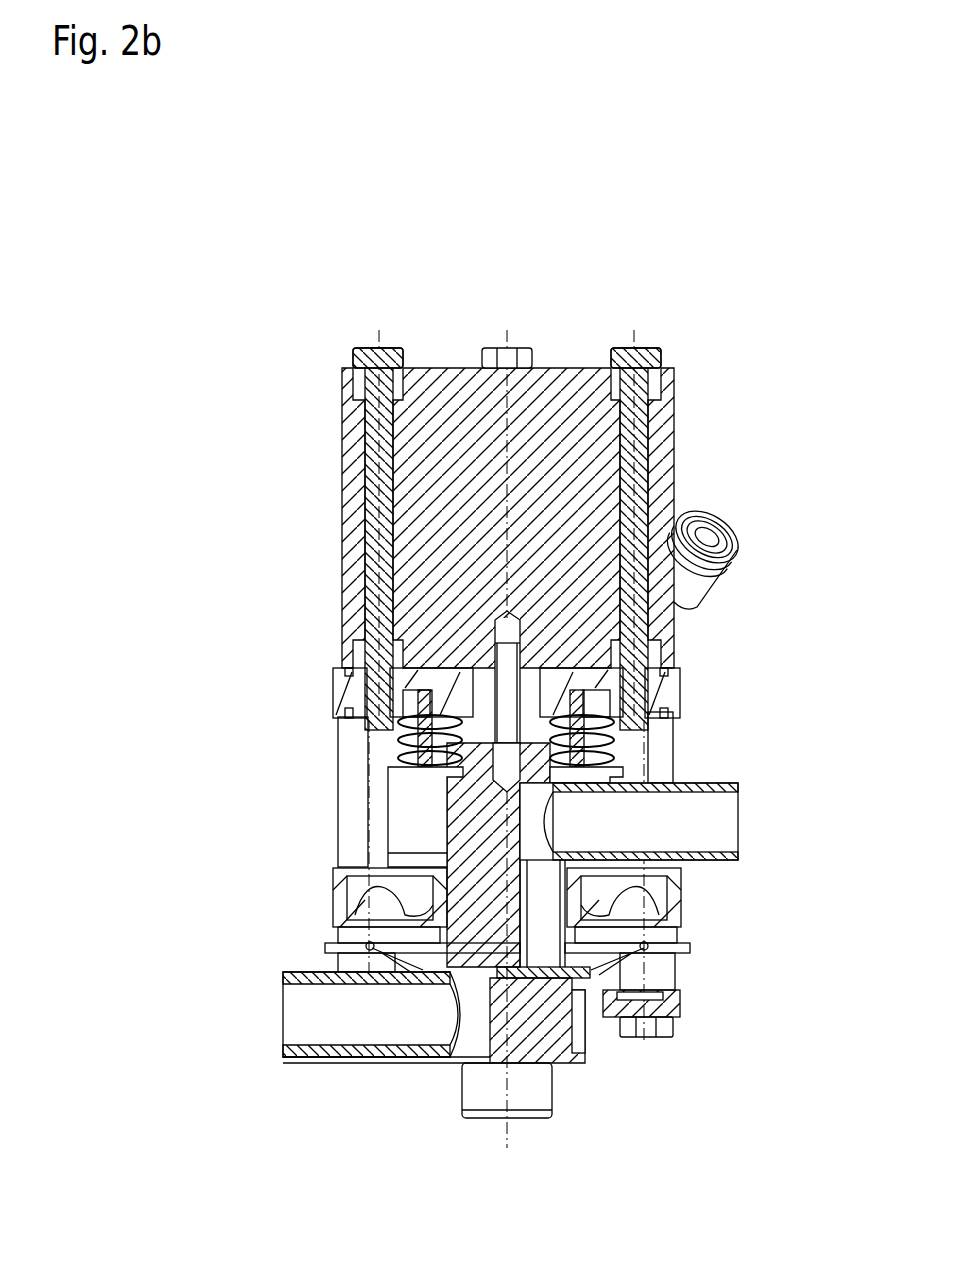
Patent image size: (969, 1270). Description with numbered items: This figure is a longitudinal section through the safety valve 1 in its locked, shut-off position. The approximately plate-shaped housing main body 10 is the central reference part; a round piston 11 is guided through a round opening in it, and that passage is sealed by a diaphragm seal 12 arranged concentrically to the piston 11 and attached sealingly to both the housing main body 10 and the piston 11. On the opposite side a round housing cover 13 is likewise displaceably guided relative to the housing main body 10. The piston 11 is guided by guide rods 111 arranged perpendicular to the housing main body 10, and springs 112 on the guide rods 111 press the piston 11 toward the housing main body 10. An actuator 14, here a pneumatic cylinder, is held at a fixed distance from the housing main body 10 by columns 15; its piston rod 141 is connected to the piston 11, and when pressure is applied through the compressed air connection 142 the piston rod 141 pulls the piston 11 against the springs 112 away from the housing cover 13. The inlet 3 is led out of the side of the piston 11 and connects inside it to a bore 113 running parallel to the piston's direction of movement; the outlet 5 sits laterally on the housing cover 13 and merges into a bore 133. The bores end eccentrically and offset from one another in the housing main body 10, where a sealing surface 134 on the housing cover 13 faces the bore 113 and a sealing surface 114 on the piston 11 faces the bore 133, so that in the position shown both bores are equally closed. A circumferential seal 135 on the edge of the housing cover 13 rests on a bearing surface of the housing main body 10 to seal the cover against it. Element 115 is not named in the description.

The safety valve 1 is at (521, 703).
The inlet 3 is at (737, 783).
The outlet 5 is at (300, 1027).
The housing main body 10 is at (337, 920).
The piston 11 is at (470, 807).
The diaphragm seal 12 is at (375, 895).
The housing cover 13 is at (548, 1030).
The actuator 14 is at (428, 415).
The columns 15 is at (658, 757).
The guide rods 111 is at (650, 725).
The springs 112 is at (633, 710).
The bore 113 is at (553, 807).
The sealing surface 114 is at (480, 848).
The diaphragm plate 115 is at (657, 932).
The bore 133 is at (470, 1040).
The sealing surface 134 is at (592, 1003).
The circumferential seal 135 is at (655, 948).
The piston rod 141 is at (338, 707).
The compressed air connection 142 is at (713, 570).